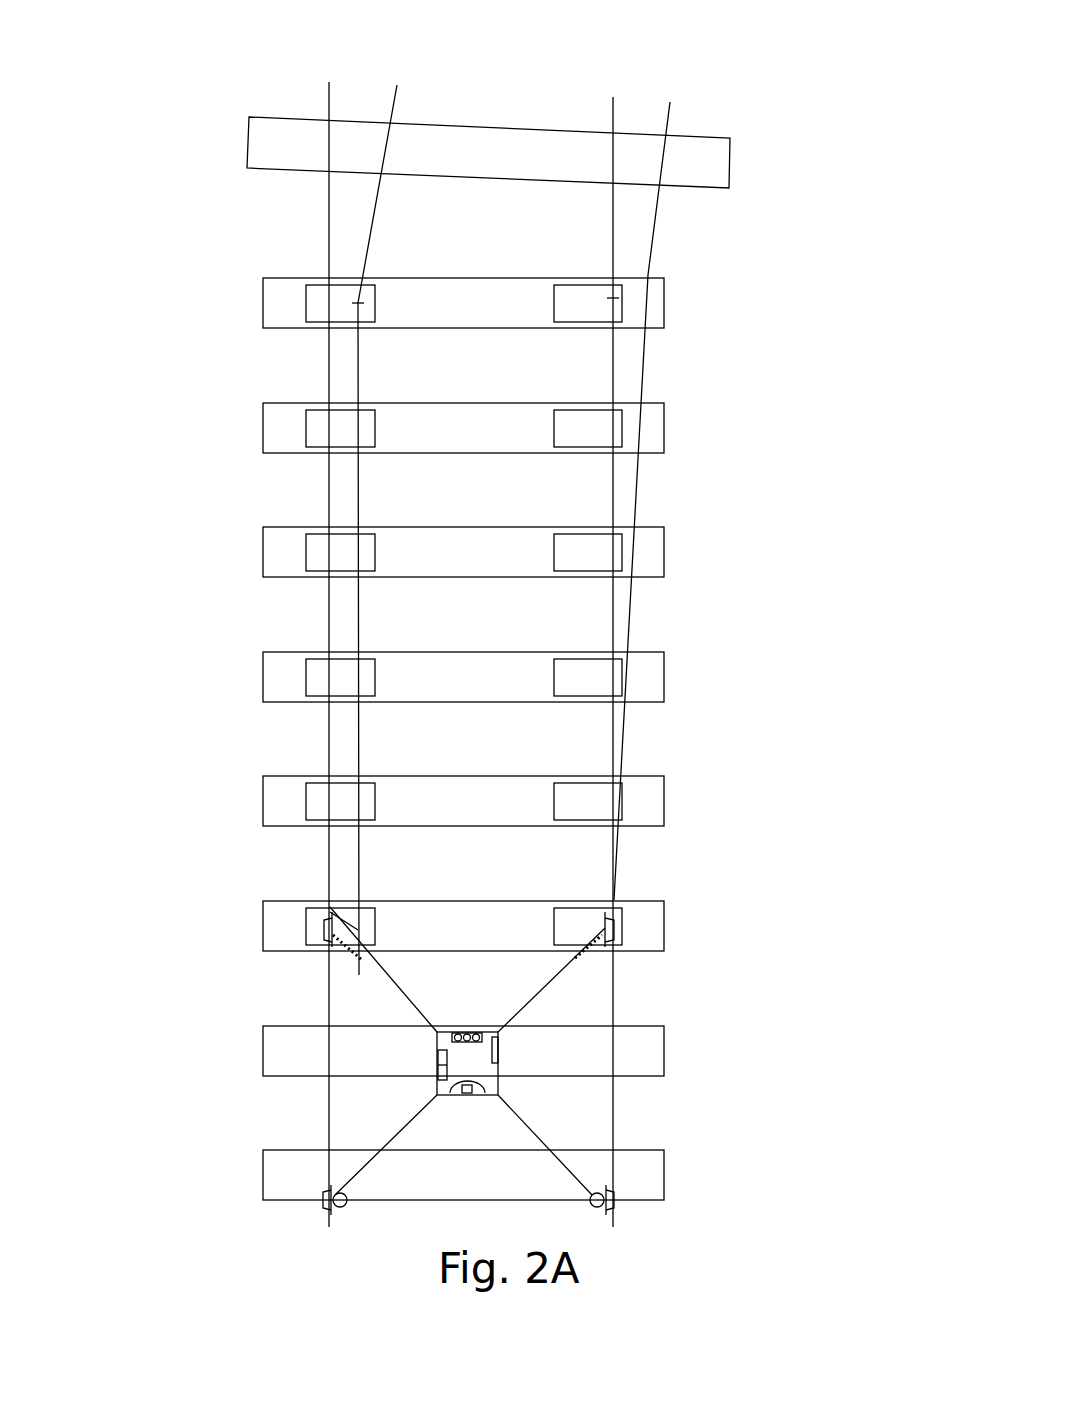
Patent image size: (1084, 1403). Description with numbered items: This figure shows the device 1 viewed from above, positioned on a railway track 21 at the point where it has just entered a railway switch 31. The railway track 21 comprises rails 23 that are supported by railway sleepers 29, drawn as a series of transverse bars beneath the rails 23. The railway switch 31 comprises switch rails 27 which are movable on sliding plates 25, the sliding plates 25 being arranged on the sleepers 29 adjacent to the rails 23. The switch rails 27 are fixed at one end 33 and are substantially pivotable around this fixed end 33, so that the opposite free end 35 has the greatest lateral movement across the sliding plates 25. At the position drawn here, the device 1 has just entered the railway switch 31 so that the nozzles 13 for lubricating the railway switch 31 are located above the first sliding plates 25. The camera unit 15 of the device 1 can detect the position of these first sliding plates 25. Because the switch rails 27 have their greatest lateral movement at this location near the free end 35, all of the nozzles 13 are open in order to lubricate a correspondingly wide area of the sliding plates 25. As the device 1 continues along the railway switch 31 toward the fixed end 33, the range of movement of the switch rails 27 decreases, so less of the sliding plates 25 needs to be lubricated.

The device 1 is at (577, 1005).
The nozzles 13 is at (340, 955).
The camera unit 15 is at (472, 1032).
The railway track 21 is at (792, 114).
The rails 23 is at (328, 247).
The sliding plates 25 is at (322, 672).
The switch rails 27 is at (358, 752).
The railway sleepers 29 is at (292, 302).
The railway switch 31 is at (718, 492).
The fixed end 33 is at (357, 303).
The free end 35 is at (330, 907).